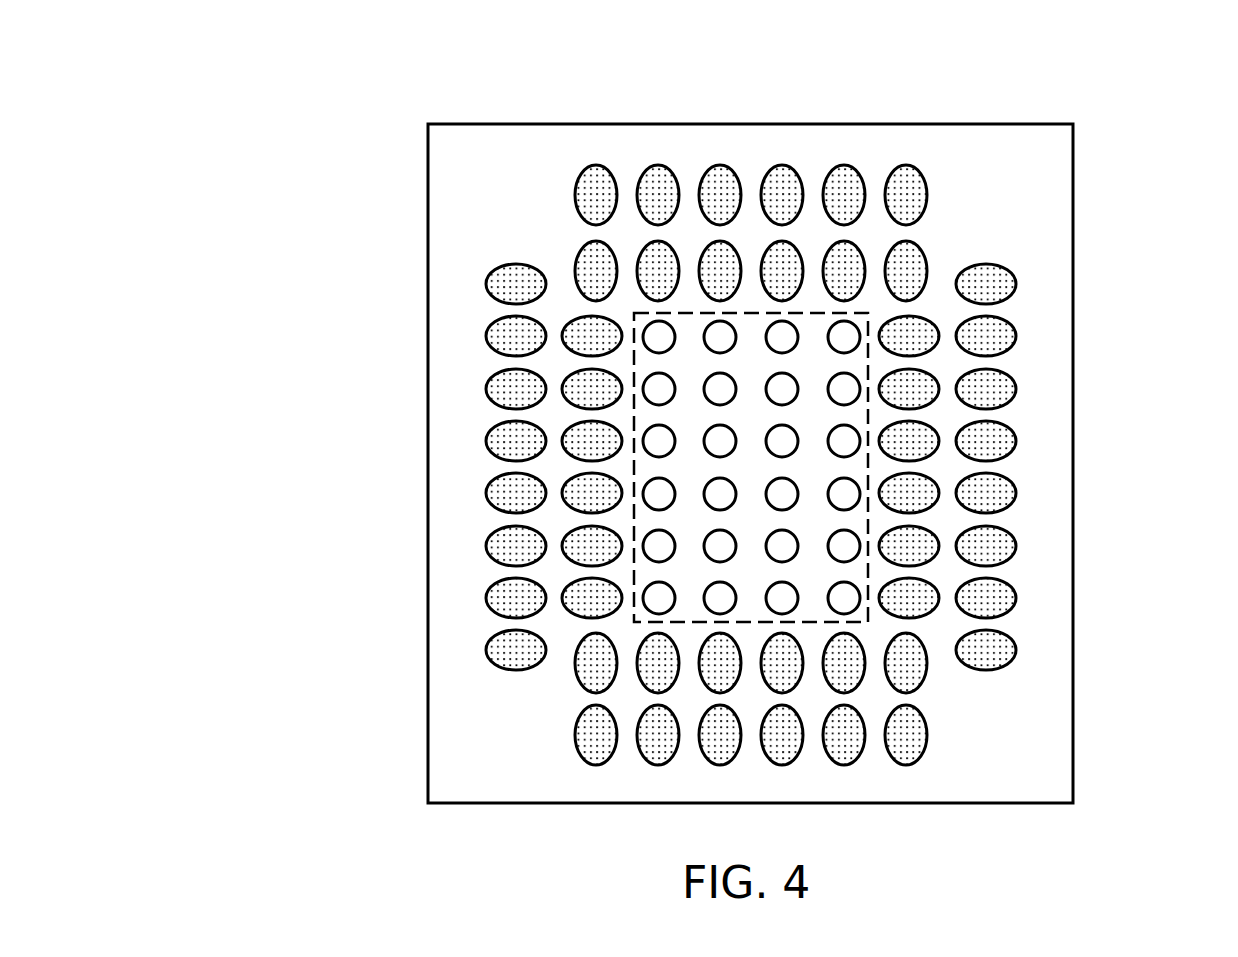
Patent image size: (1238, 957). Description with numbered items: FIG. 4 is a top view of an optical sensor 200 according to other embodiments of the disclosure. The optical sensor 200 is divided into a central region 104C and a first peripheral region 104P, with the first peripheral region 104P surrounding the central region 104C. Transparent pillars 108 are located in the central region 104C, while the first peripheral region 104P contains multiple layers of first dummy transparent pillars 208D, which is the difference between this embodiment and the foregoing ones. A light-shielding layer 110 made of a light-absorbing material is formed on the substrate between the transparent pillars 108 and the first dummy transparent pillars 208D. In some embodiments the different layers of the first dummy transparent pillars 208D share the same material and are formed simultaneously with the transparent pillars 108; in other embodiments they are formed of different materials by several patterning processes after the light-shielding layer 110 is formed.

The optical sensor 200 is at (384, 108).
The first peripheral region 104P is at (470, 172).
The first dummy transparent pillars 208D is at (905, 193).
The transparent pillars 108 is at (847, 337).
The central region 104C is at (847, 467).
The light-shielding layer 110 is at (1055, 781).